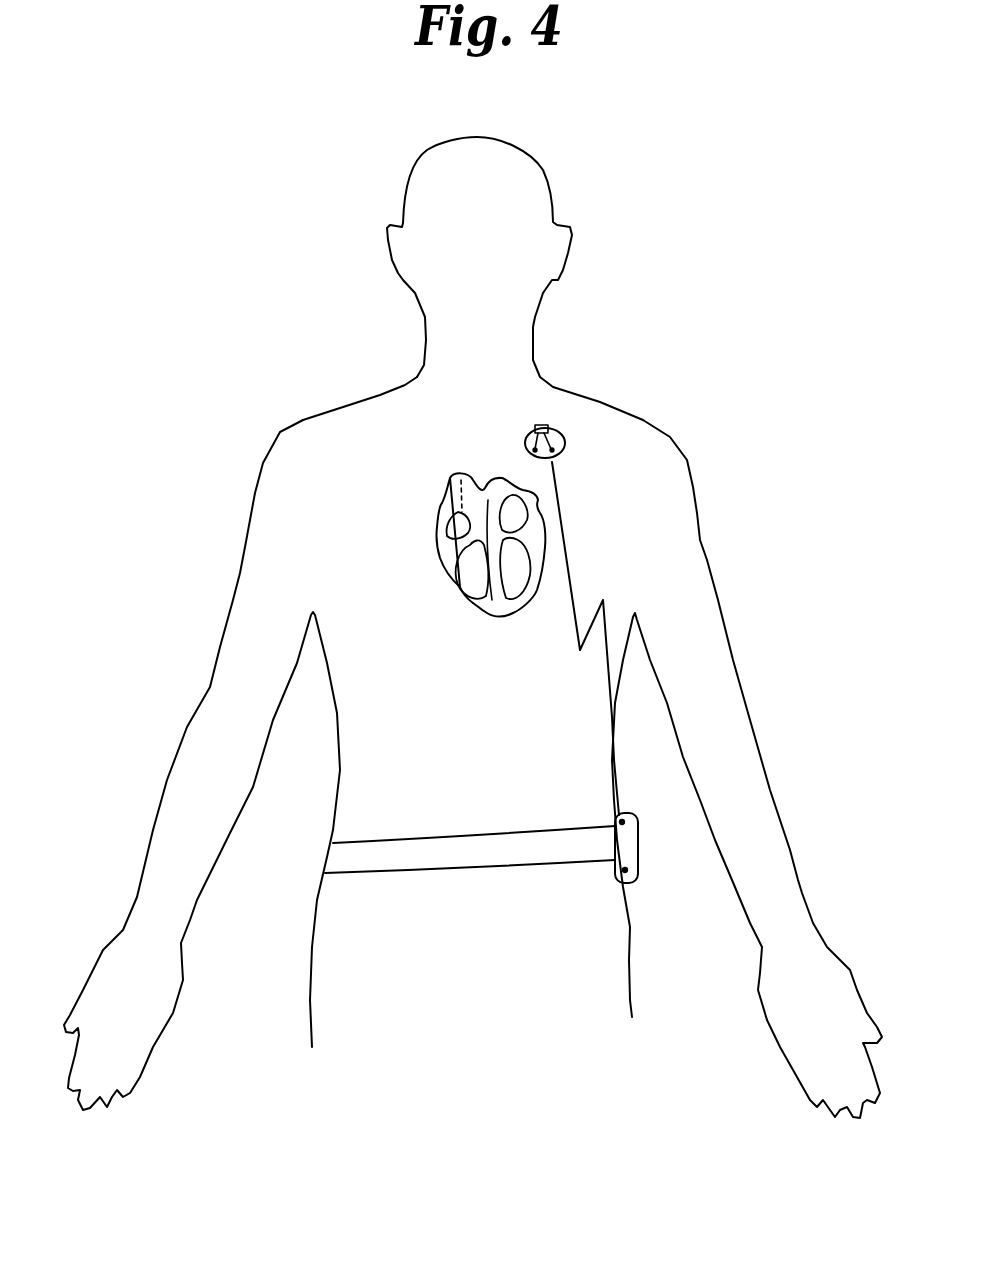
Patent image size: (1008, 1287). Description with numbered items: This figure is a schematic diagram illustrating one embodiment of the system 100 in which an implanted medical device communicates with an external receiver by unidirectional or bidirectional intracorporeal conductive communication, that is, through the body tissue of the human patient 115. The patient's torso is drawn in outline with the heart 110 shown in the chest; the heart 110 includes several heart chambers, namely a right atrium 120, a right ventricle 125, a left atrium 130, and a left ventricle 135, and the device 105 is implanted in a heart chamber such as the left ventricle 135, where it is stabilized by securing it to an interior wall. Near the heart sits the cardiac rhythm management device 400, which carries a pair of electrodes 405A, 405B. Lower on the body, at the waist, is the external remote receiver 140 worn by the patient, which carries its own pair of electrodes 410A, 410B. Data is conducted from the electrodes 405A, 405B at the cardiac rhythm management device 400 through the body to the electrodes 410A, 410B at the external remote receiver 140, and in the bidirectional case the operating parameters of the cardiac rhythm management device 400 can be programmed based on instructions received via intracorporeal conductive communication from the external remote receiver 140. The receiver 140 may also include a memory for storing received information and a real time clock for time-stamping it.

The system 100 is at (626, 612).
The device 105 is at (530, 580).
The heart 110 is at (473, 600).
The human patient 115 is at (298, 420).
The right atrium 120 is at (468, 527).
The right ventricle 125 is at (468, 578).
The left atrium 130 is at (512, 522).
The left ventricle 135 is at (512, 560).
The external remote receiver 140 is at (651, 809).
The cardiac rhythm management device 400 is at (573, 441).
The electrode 405A is at (527, 438).
The electrode 405B is at (548, 426).
The electrode 410A is at (618, 820).
The electrode 410B is at (618, 872).